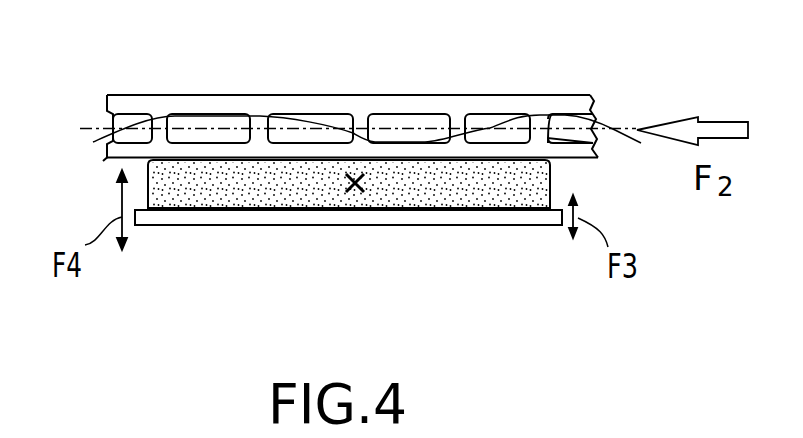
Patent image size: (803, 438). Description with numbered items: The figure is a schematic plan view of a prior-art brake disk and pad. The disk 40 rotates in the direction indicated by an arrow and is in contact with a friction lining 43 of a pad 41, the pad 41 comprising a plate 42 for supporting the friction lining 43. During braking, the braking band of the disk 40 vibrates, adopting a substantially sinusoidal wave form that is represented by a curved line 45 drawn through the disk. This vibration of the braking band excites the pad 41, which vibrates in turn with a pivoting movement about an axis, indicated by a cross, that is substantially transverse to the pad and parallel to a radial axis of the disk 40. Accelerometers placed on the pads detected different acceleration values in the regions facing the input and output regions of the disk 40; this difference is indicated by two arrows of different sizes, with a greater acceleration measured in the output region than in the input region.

The disk 40 is at (503, 93).
The pad 41 is at (555, 182).
The plate 42 is at (245, 210).
The friction lining 43 is at (473, 198).
The curved line 45 is at (252, 120).